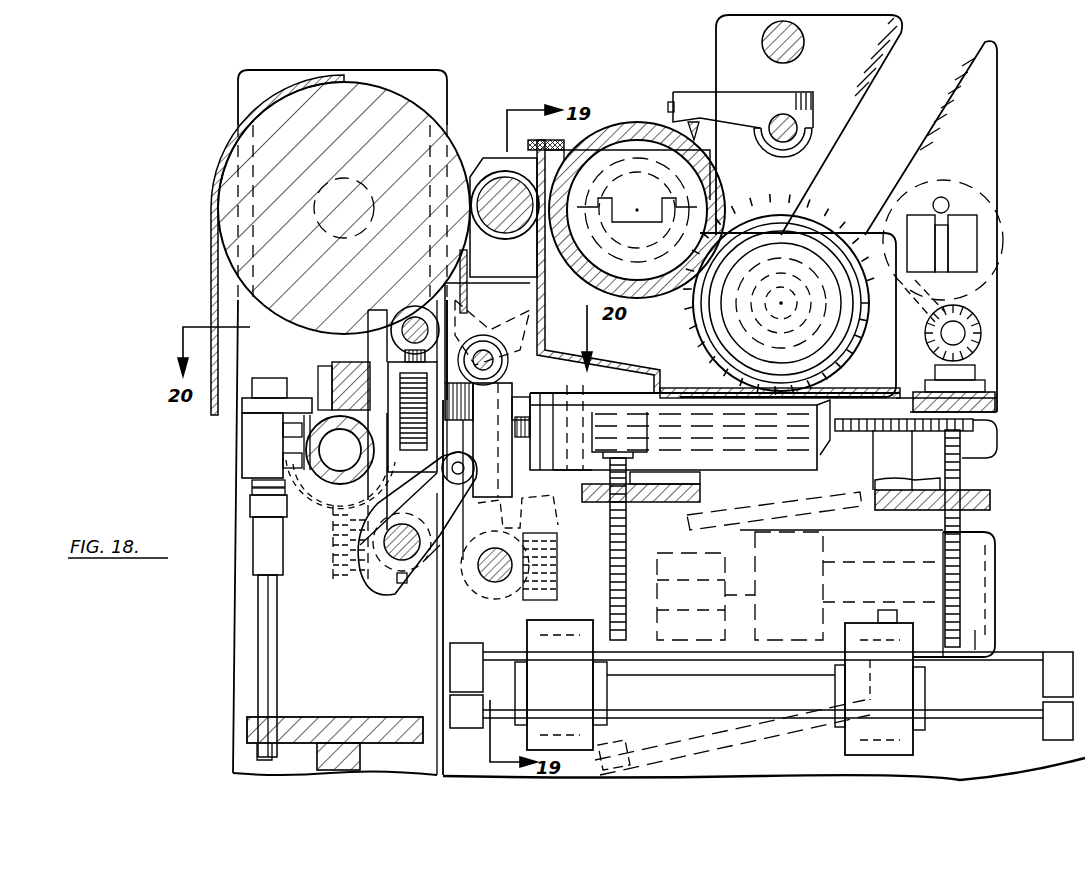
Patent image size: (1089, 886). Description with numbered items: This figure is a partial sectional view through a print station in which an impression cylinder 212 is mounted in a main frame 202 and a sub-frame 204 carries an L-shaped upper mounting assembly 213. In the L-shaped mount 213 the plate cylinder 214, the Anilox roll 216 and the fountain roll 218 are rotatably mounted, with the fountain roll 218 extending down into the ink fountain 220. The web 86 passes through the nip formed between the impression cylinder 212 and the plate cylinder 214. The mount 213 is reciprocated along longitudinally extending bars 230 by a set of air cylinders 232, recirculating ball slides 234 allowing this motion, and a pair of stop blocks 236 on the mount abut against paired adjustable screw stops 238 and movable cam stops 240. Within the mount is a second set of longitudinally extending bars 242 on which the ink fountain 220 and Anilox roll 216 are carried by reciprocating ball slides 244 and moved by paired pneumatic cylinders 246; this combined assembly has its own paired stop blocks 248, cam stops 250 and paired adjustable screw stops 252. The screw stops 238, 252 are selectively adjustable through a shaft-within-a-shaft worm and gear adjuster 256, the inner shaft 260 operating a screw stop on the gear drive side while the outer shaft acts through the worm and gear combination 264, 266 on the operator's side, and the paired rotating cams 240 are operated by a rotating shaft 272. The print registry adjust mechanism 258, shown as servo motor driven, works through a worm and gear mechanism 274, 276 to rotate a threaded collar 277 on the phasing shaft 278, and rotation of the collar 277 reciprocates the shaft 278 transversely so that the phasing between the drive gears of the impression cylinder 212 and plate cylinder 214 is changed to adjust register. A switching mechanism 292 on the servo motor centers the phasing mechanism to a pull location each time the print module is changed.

The web 86 is at (211, 268).
The frame 202 is at (232, 690).
The sub-frame 204 is at (1015, 662).
The impression cylinder 212 is at (352, 88).
The L-shaped upper mounting assembly 213 is at (1000, 530).
The plate cylinder 214 is at (490, 180).
The Anilox roll 216 is at (632, 124).
The fountain roll 218 is at (792, 232).
The ink fountain 220 is at (755, 400).
The bars 230 is at (970, 713).
The air cylinders 232 is at (735, 745).
The recirculating ball slides 234 is at (610, 692).
The stop blocks 236 is at (432, 572).
The adjustable screw stops 238 is at (470, 398).
The cam stops 240 is at (400, 588).
The bars 242 is at (932, 580).
The reciprocating ball slides 244 is at (800, 585).
The pneumatic cylinders 246 is at (778, 497).
The stop blocks 248 is at (630, 460).
The cam stops 250 is at (498, 612).
The adjustable screw stops 252 is at (545, 422).
The shaft worm and gear adjuster 256 is at (447, 292).
The helical gear lash adjustment 258 is at (246, 570).
The inner shaft 260 is at (392, 326).
The worm 264 is at (403, 306).
The gear 266 is at (400, 387).
The rotating shaft 272 is at (372, 582).
The worm 274 is at (250, 484).
The gear 276 is at (300, 468).
The threaded collar 277 is at (340, 499).
The phasing shaft 278 is at (330, 420).
The switching mechanism 292 is at (238, 447).